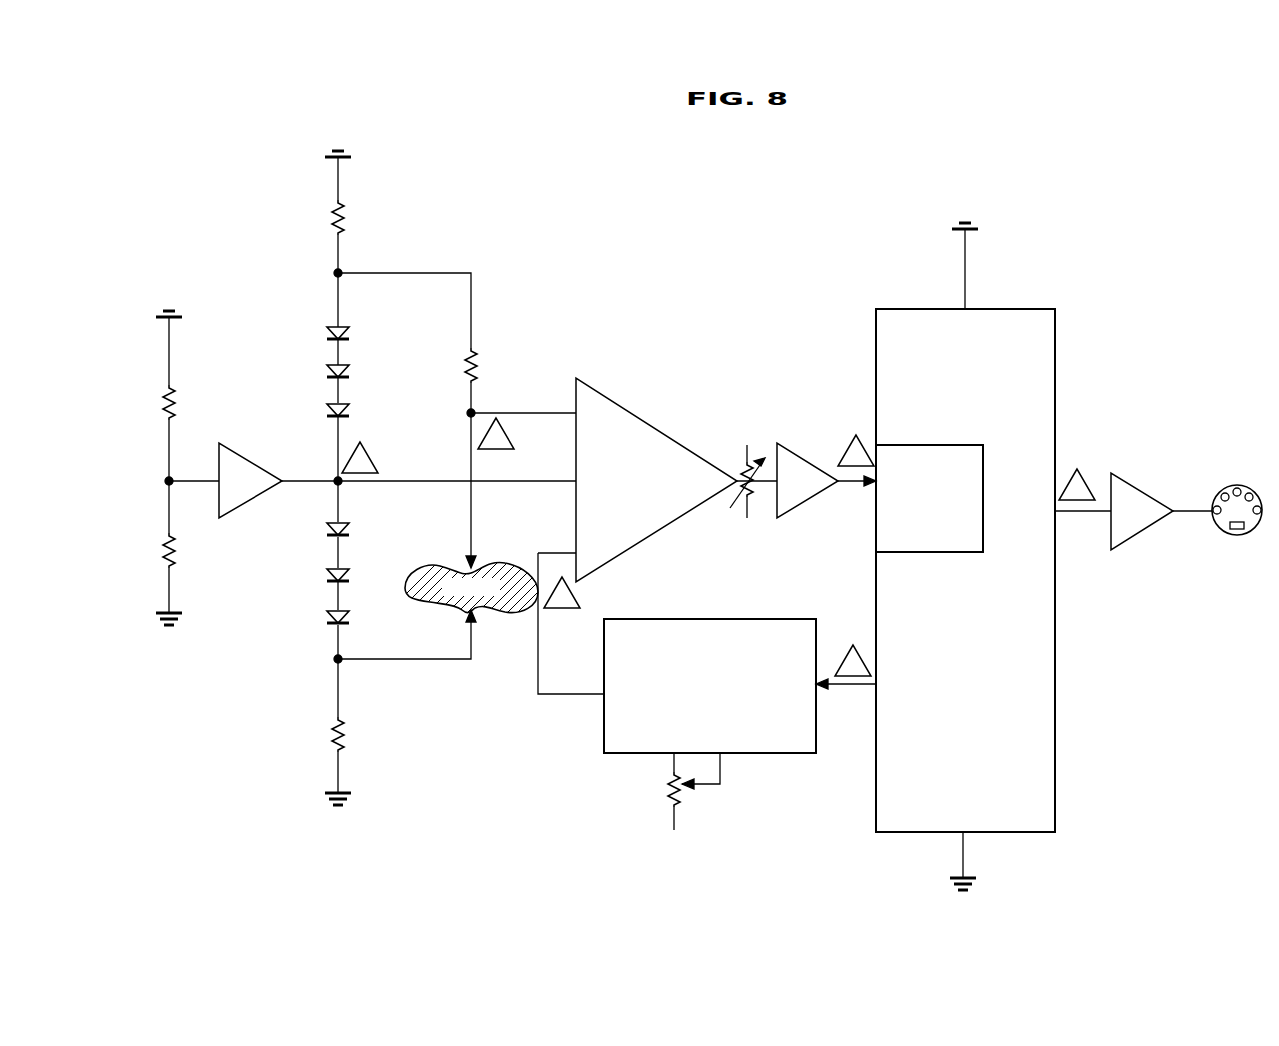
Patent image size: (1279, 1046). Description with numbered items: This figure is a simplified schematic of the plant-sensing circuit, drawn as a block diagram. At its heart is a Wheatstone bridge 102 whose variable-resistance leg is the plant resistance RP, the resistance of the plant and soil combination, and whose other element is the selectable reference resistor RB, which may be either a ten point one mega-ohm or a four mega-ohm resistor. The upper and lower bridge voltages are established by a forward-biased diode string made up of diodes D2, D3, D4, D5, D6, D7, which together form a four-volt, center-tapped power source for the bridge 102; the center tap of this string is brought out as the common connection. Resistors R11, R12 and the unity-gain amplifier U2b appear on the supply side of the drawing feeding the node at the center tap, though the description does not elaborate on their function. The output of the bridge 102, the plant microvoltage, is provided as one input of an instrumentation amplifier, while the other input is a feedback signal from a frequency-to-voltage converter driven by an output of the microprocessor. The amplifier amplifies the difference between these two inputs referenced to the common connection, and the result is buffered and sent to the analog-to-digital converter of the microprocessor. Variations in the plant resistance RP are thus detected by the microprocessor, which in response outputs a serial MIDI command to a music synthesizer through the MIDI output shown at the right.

The Wheatstone bridge 102 is at (506, 224).
The resistor R11 is at (146, 403).
The resistor R12 is at (150, 550).
The unity gain buffer amplifier U2b is at (250, 480).
The diode D2 is at (323, 334).
The diode D3 is at (323, 372).
The diode D4 is at (323, 411).
The diode D5 is at (323, 530).
The diode D6 is at (323, 576).
The diode D7 is at (323, 618).
The reference resistor RB is at (488, 365).
The plant resistance RP is at (470, 581).